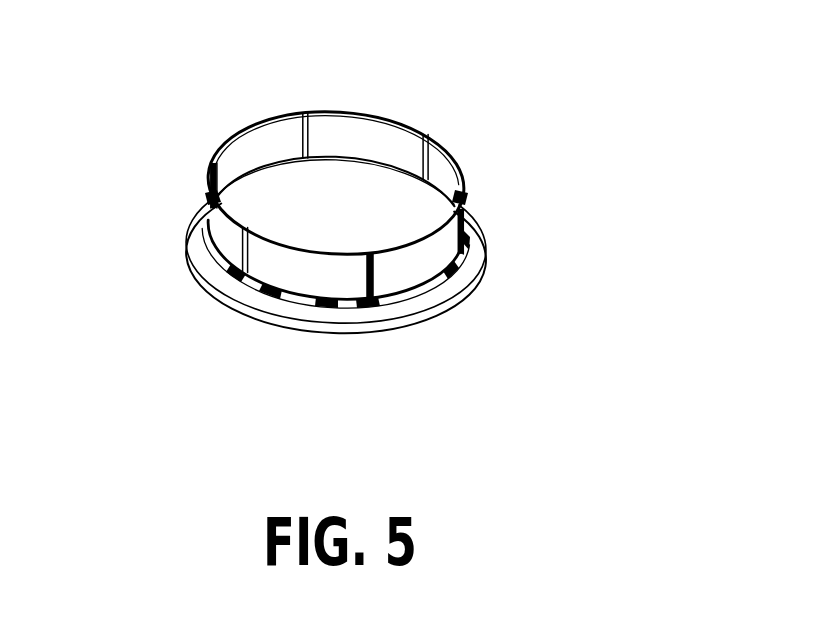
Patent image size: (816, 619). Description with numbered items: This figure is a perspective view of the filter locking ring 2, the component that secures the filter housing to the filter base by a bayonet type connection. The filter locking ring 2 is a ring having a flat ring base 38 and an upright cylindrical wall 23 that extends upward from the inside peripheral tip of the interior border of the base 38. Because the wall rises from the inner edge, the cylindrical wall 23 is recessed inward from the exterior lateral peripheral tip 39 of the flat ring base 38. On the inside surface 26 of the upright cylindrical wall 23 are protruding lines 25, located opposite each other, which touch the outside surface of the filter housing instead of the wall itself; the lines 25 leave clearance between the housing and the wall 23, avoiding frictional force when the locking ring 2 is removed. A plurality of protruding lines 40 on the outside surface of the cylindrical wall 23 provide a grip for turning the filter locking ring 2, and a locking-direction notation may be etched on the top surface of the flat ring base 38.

The filter locking ring 2 is at (355, 206).
The upright cylindrical wall 23 is at (290, 272).
The protruding lines 25 is at (297, 137).
The inside surface of the upright cylindrical wall 26 is at (393, 137).
The base 38 is at (470, 212).
The exterior lateral peripheral tip 39 is at (467, 273).
The protruding lines 40 is at (233, 250).